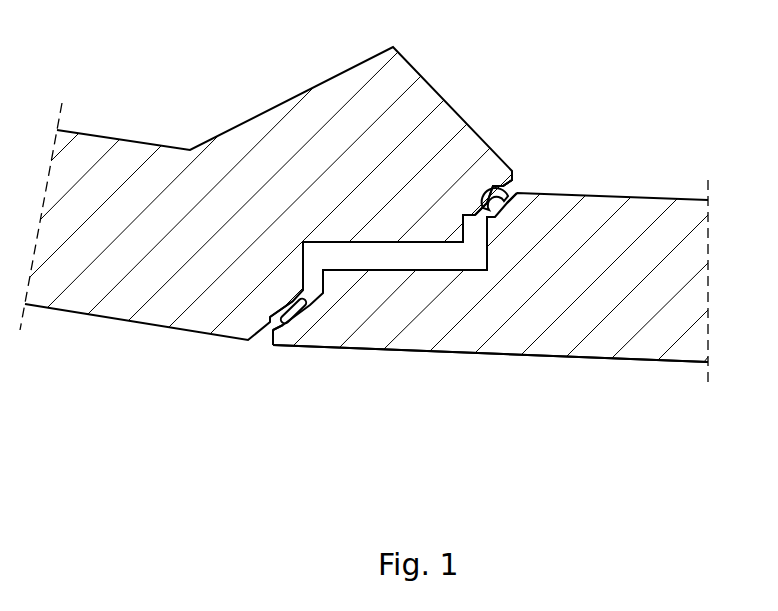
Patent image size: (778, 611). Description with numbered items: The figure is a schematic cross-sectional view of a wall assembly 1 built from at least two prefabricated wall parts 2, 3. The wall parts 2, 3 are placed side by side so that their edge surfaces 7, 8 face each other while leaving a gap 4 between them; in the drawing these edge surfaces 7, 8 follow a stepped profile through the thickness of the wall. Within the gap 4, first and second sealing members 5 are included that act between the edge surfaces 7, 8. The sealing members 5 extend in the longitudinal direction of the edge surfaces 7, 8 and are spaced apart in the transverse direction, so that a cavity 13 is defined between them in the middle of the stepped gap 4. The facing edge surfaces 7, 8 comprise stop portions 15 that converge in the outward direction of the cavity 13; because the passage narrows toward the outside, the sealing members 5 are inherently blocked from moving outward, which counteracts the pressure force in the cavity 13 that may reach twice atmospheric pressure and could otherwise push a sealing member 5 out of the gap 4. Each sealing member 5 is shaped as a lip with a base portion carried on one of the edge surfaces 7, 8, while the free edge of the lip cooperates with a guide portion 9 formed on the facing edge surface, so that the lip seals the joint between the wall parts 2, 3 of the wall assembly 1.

The wall assembly 1 is at (555, 414).
The prefabricated wall part 2 is at (618, 333).
The prefabricated wall part 3 is at (235, 155).
The gap 4 is at (512, 187).
The sealing member 5 is at (510, 193).
The edge surface 7 is at (417, 260).
The edge surface 8 is at (452, 253).
The guide portion 9 is at (497, 176).
The cavity 13 is at (336, 255).
The stop portion 15 is at (501, 180).